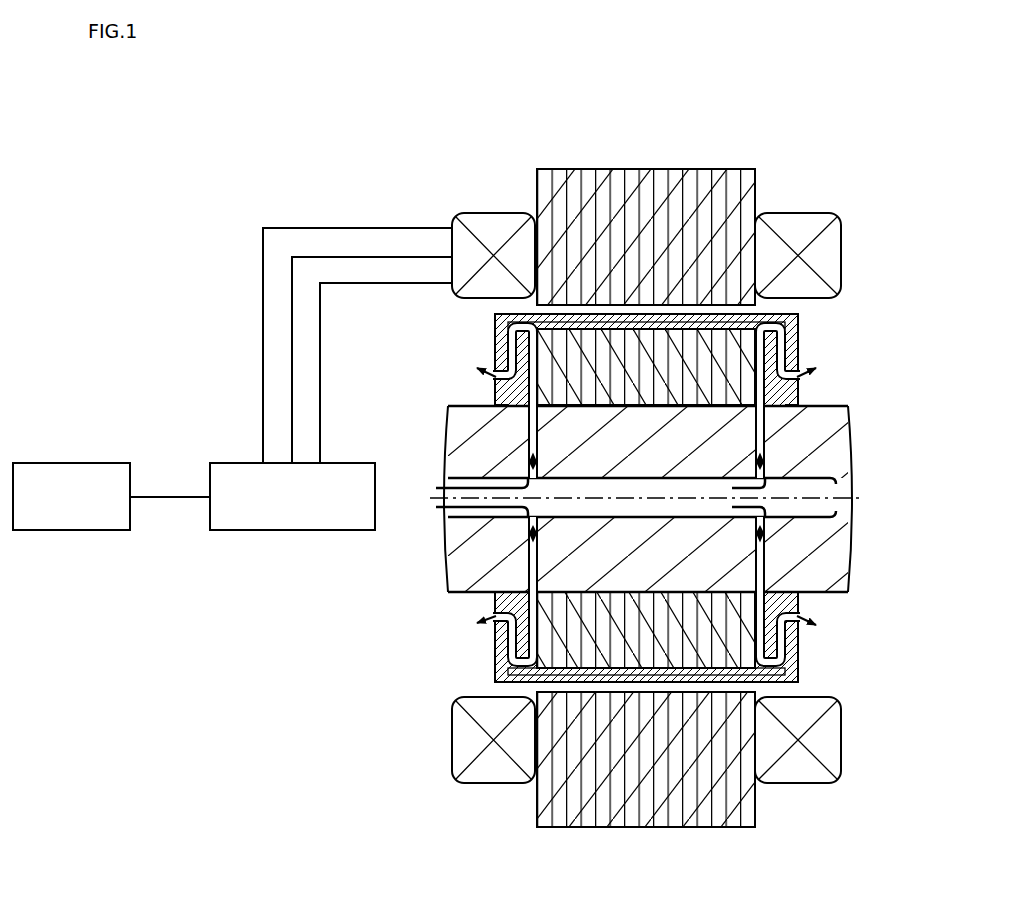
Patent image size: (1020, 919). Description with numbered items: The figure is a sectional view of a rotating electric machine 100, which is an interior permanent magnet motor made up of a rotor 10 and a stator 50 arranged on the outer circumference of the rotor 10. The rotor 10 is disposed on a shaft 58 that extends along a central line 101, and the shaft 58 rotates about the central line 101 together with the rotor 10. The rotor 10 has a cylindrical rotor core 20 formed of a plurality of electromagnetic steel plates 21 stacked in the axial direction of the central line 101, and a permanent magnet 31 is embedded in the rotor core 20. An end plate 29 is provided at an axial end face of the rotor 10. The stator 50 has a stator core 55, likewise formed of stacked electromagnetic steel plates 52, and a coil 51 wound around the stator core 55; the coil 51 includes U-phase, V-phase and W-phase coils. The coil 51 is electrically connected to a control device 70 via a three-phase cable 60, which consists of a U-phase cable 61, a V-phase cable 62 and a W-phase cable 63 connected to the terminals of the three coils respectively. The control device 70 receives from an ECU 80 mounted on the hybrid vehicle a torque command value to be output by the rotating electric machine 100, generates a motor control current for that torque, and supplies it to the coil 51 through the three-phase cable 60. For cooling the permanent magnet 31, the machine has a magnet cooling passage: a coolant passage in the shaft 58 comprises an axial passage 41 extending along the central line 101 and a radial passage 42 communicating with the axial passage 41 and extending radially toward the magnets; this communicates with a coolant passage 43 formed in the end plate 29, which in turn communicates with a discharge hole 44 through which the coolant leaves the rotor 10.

The rotating electric machine 100 is at (842, 112).
The rotor 10 is at (493, 656).
The rotor core 20 is at (735, 396).
The electromagnetic steel plate 21 is at (545, 358).
The end plate 29 is at (793, 360).
The permanent magnet 31 is at (733, 331).
The axial passage 41 is at (835, 487).
The radial passage 42 is at (755, 554).
The coolant passage 43 is at (770, 660).
The discharge hole 44 is at (497, 384).
The stator 50 is at (763, 190).
The coil 51 is at (479, 215).
The electromagnetic steel plate 52 is at (699, 182).
The stator core 55 is at (537, 187).
The shaft 58 is at (825, 443).
The three-phase cable 60 is at (345, 165).
The U-phase cable 61 is at (330, 228).
The V-phase cable 62 is at (305, 257).
The W-phase cable 63 is at (317, 310).
The control device 70 is at (355, 463).
The ECU 80 is at (107, 463).
The central line 101 is at (835, 510).